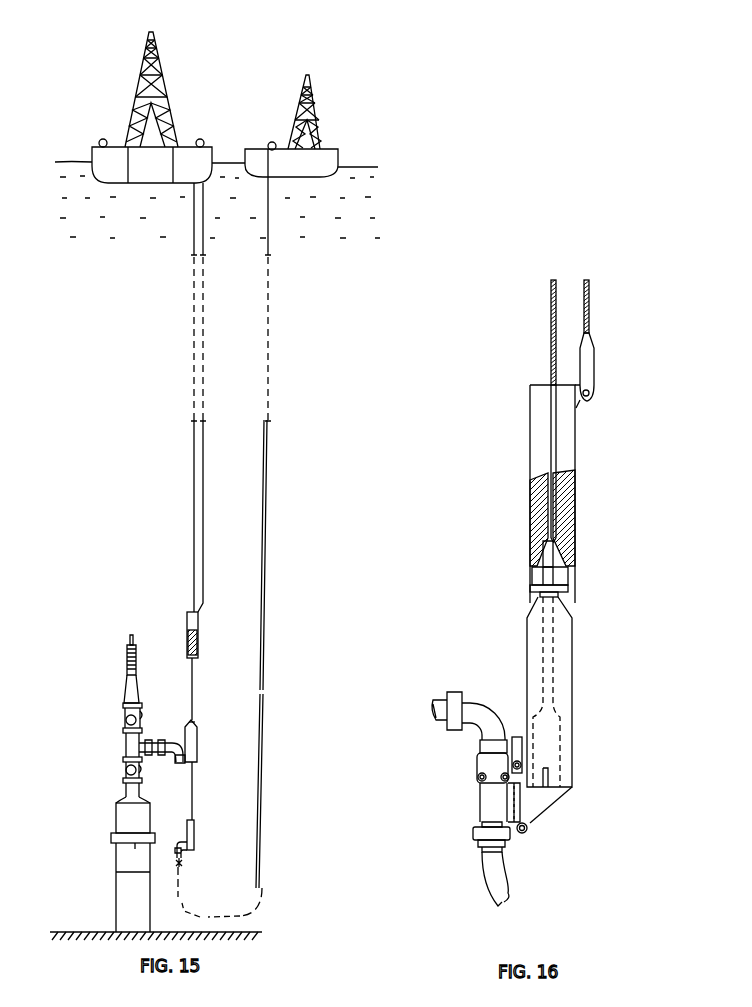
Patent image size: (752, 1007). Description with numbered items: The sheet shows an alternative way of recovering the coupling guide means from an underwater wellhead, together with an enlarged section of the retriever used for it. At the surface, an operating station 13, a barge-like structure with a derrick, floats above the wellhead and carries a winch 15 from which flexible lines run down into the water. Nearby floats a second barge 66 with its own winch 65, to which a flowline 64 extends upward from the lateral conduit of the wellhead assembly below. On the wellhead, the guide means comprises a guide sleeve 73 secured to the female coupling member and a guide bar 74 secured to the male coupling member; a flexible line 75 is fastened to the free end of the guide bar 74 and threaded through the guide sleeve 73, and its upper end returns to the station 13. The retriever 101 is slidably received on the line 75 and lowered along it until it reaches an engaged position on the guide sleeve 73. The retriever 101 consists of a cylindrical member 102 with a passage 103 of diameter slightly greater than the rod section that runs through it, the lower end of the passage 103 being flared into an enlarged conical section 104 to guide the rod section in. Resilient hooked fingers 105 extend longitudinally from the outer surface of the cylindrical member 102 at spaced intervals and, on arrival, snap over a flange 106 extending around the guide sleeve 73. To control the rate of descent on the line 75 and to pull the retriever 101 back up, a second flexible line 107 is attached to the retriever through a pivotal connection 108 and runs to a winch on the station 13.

In FIG. 15, the operating station 13 is at (176, 93).
In FIG. 15, the winch 15 is at (199, 146).
In FIG. 15, the winch 65 is at (269, 145).
In FIG. 15, the barge 66 is at (327, 155).
In FIG. 15, the flowline 64 is at (269, 449).
In FIG. 15, the flexible line 75 is at (192, 508).
In FIG. 16, the flexible line 75 is at (549, 316).
In FIG. 15, the flexible line 107 is at (205, 505).
In FIG. 16, the flexible line 107 is at (592, 313).
In FIG. 15, the retriever 101 is at (201, 626).
In FIG. 16, the retriever 101 is at (579, 452).
In FIG. 16, the cylindrical member 102 is at (529, 446).
In FIG. 16, the passage 103 is at (554, 511).
In FIG. 16, the enlarged conical section 104 is at (559, 563).
In FIG. 16, the resilient hooked fingers 105 is at (529, 589).
In FIG. 15, the flange 106 is at (195, 721).
In FIG. 16, the flange 106 is at (568, 590).
In FIG. 16, the pivotal connection 108 is at (596, 386).
In FIG. 15, the guide sleeve 73 is at (201, 738).
In FIG. 15, the guide bar 74 is at (199, 845).